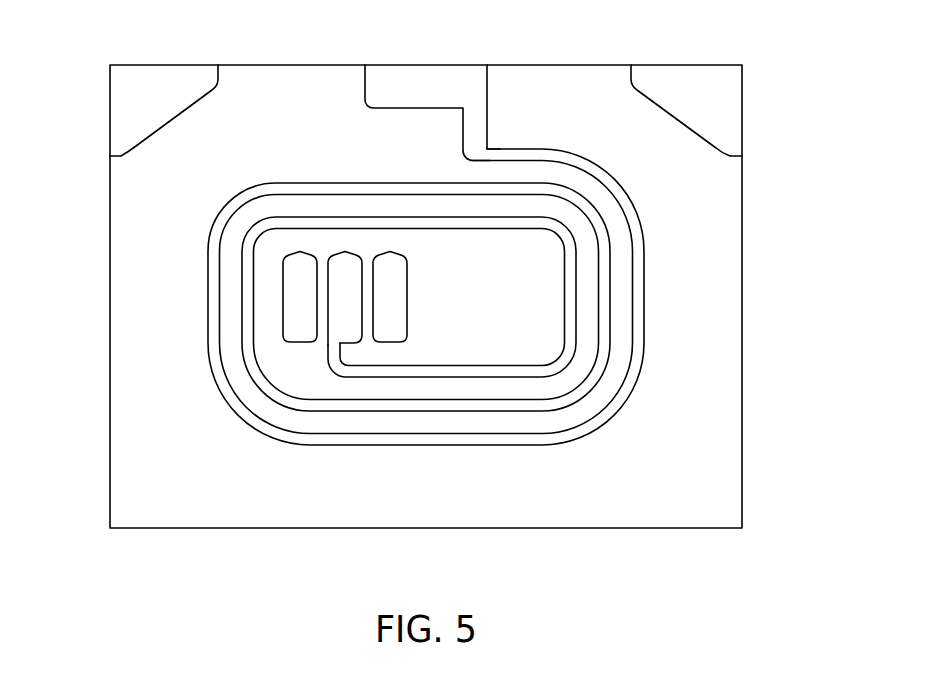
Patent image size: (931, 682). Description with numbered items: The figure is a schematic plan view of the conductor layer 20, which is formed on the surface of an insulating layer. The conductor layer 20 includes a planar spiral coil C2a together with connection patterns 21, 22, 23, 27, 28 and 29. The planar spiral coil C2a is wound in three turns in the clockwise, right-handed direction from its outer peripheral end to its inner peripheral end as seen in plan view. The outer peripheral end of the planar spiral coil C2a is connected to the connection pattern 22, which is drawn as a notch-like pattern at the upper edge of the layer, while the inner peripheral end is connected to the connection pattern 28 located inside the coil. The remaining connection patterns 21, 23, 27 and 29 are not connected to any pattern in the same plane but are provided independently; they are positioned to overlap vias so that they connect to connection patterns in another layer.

The conductor layer 20 is at (714, 22).
The connection pattern 21 is at (722, 103).
The connection pattern 22 is at (422, 84).
The connection pattern 23 is at (132, 99).
The connection pattern 27 is at (307, 330).
The connection pattern 28 is at (350, 328).
The connection pattern 29 is at (393, 298).
The planar spiral coil C2a is at (637, 280).